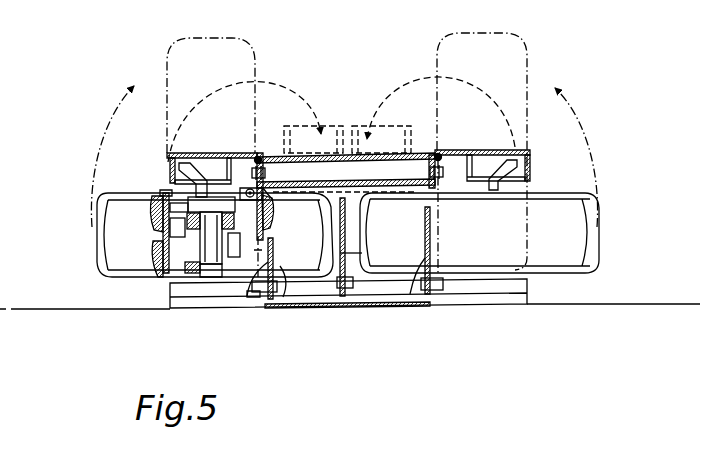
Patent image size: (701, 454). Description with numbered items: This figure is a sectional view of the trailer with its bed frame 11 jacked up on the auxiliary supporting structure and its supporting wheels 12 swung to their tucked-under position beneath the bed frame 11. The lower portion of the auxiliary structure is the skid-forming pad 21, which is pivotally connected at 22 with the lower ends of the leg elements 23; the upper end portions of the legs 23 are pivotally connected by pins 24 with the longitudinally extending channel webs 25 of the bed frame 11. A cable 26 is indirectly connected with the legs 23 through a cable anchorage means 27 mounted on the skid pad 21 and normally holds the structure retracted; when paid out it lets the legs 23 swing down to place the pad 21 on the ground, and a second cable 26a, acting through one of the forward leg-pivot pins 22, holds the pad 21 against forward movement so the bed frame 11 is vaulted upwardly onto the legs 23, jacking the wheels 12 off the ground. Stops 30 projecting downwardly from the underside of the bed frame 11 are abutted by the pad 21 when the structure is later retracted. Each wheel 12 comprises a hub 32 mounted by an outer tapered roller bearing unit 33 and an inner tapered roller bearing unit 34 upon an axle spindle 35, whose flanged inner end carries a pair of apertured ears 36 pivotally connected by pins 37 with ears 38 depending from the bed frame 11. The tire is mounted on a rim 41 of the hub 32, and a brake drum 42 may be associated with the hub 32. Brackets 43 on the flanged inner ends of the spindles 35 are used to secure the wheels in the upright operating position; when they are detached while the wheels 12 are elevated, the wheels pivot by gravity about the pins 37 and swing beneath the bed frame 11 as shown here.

The bed frame 11 is at (349, 124).
The supporting wheels 12 is at (99, 266).
The skid-forming pad 21 is at (347, 309).
The pivotal connection 22 is at (255, 292).
The leg elements 23 is at (262, 256).
The pins 24 is at (252, 172).
The channel webs 25 is at (259, 156).
The cable 26 is at (350, 254).
The cable 26a is at (283, 298).
The cable anchorage means 27 is at (337, 290).
The stops 30 is at (352, 199).
The hub 32 is at (172, 274).
The outer tapered roller bearing unit 33 is at (192, 272).
The inner tapered roller bearing unit 34 is at (190, 224).
The axle spindle 35 is at (212, 268).
The apertured ears 36 is at (212, 152).
The pins 37 is at (271, 209).
The ears 38 is at (265, 182).
The rim 41 is at (165, 196).
The brake drums 42 is at (172, 197).
The brackets 43 is at (186, 166).